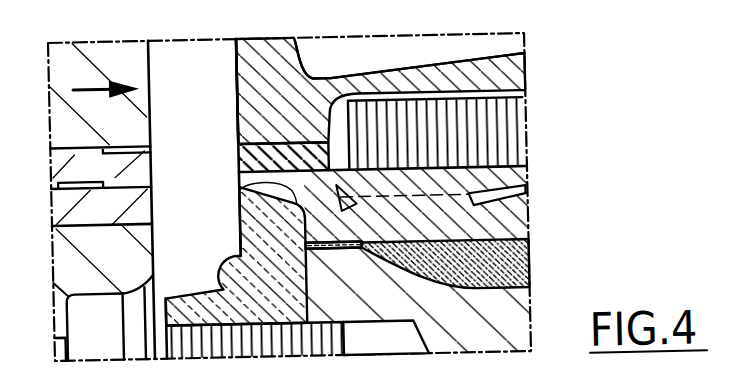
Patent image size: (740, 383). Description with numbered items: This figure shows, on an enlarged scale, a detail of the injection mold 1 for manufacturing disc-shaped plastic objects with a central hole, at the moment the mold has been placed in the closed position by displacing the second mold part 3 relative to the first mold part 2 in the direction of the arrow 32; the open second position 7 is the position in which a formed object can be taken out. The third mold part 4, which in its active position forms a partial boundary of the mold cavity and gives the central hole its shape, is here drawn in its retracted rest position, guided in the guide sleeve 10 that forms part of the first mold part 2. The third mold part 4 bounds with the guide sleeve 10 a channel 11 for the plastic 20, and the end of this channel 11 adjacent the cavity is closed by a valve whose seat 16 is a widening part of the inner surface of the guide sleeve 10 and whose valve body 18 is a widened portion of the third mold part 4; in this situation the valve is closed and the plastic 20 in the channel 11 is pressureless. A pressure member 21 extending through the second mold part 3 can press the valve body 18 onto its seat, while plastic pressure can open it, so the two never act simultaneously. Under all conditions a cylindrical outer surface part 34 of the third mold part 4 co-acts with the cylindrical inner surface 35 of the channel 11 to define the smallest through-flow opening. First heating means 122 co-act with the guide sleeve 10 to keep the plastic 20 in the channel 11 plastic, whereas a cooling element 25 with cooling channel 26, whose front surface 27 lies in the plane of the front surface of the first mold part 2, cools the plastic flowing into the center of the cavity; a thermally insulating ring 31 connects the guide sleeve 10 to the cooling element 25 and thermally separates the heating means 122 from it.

The injection mold 1 is at (576, 165).
The first mold part 2 is at (266, 57).
The second mold part 3 is at (114, 53).
The third mold part 4 is at (506, 341).
The open second position 7 is at (183, 36).
The guide sleeve 10 is at (499, 229).
The channel 11 is at (582, 256).
The valve seat 16 is at (236, 196).
The valve body 18 is at (234, 242).
The plastic 20 is at (501, 281).
The pressure member 21 is at (70, 209).
The cooling element 25 is at (451, 78).
The cooling channel 26 is at (323, 62).
The front surface 27 is at (236, 86).
The thermally insulating ring 31 is at (234, 168).
The arrow 32 is at (72, 88).
The cylindrical outer surface part 34 is at (340, 264).
The cylindrical inner surface 35 is at (360, 243).
The first heating means 122 is at (494, 136).